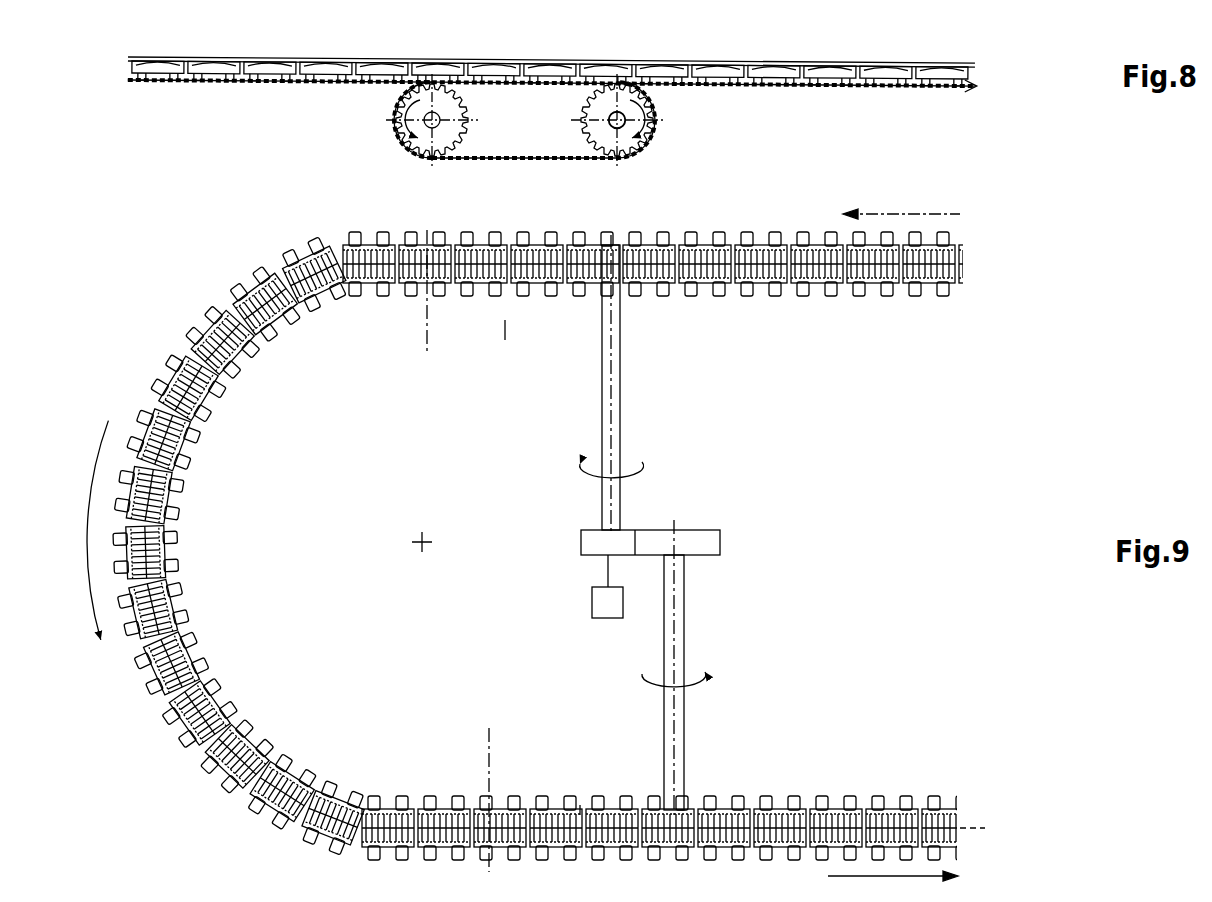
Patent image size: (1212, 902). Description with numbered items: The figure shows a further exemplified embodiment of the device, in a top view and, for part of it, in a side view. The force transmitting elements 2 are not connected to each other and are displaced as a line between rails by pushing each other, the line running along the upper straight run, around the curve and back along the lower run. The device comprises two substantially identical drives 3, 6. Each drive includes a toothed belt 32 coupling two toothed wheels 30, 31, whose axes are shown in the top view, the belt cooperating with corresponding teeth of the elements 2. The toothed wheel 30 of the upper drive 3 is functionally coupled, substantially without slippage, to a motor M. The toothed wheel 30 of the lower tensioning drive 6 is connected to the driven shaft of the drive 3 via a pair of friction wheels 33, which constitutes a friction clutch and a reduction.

In FIG. 8, the force transmitting elements 2 is at (540, 67).
In FIG. 9, the force transmitting elements 2 is at (317, 247).
In FIG. 9, the drive 3 is at (522, 299).
In FIG. 9, the drive 6 is at (587, 793).
In FIG. 8, the toothed wheel 30 is at (631, 135).
In FIG. 9, the toothed wheel 30 is at (619, 388).
In FIG. 8, the toothed wheel 31 is at (416, 143).
In FIG. 9, the toothed wheel 31 is at (427, 322).
In FIG. 8, the toothed belt 32 is at (543, 160).
In FIG. 9, the pair of friction wheels 33 is at (640, 528).